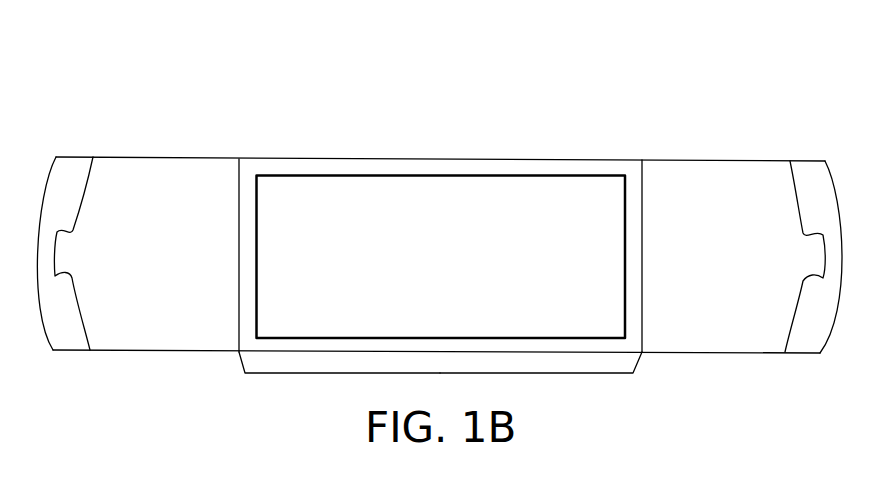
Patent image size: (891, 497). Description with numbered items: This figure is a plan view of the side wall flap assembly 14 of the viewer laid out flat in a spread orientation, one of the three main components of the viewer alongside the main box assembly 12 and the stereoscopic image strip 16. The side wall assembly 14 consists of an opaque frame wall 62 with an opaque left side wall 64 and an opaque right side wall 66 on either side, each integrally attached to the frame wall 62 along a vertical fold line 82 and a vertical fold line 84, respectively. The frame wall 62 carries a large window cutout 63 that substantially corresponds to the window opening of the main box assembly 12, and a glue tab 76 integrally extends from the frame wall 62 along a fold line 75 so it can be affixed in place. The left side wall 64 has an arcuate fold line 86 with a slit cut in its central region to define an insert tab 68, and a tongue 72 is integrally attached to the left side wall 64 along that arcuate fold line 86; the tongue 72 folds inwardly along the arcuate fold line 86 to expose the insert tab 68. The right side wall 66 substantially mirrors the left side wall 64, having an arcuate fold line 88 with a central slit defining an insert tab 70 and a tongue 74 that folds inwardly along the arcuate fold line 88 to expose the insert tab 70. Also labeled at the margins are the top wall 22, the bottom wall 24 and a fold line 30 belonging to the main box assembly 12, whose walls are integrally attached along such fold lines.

The main box assembly 12 is at (79, 29).
The side wall flap assembly 14 is at (477, 79).
The stereoscopic image strip 16 is at (500, 496).
The top wall 22 is at (0, 64).
The bottom wall 24 is at (0, 432).
The fold line 30 is at (0, 142).
The frame wall 62 is at (530, 168).
The window cutout 63 is at (430, 188).
The left side wall 64 is at (195, 175).
The right side wall 66 is at (708, 185).
The insert tab 68 is at (63, 243).
The insert tab 70 is at (811, 247).
The tongue 72 is at (68, 166).
The tongue 74 is at (802, 173).
The fold line 75 is at (276, 378).
The glue tab 76 is at (612, 362).
The vertical fold line 82 is at (243, 167).
The vertical fold line 84 is at (640, 172).
The arcuate fold line 86 is at (88, 177).
The arcuate fold line 88 is at (787, 183).